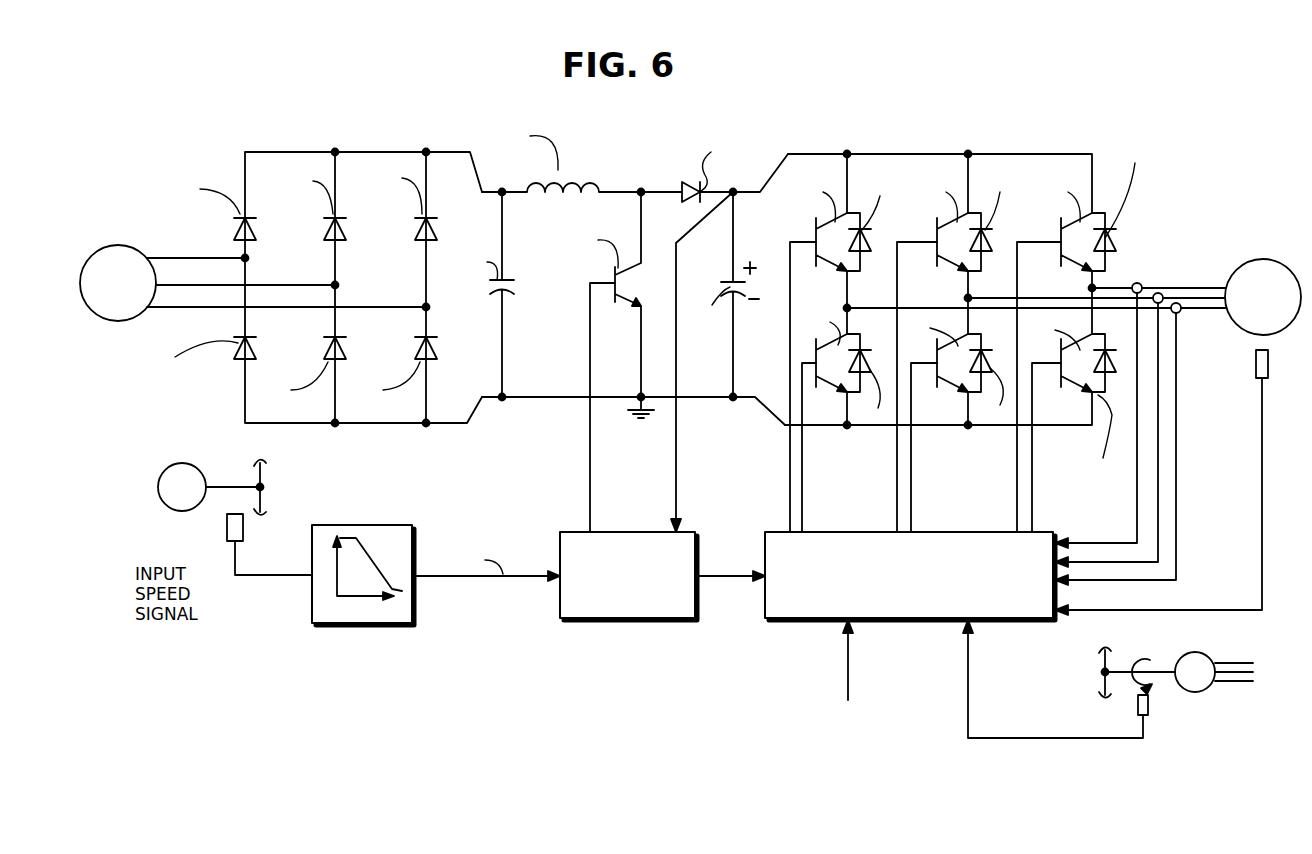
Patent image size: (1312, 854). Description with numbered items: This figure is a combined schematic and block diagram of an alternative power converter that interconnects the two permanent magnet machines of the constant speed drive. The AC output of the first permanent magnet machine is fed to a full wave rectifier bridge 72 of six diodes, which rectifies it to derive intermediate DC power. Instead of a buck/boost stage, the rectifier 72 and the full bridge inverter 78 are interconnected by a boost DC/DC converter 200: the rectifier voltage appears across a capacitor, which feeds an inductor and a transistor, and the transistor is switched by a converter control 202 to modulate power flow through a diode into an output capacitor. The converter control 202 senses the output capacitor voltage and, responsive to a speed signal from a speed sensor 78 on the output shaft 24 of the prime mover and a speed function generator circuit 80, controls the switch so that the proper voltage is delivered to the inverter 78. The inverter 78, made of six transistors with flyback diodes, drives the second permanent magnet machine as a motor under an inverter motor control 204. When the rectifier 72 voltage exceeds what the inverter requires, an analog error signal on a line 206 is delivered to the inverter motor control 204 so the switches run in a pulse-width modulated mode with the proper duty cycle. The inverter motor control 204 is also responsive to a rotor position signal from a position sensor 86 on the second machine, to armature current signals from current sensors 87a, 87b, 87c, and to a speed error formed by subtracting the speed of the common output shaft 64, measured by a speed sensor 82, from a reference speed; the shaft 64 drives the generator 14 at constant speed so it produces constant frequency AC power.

The full wave rectifier bridge 72 is at (316, 140).
The full bridge inverter 78 is at (948, 140).
The boost DC/DC converter 200 is at (625, 155).
The current sensor 87a is at (1137, 283).
The current sensor 87b is at (1158, 293).
The current sensor 87c is at (1176, 303).
The position sensor 86 is at (1268, 365).
The speed function generator circuit 80 is at (312, 595).
The output shaft of the prime mover 24 is at (222, 485).
The converter control 202 is at (603, 623).
The line 206 is at (728, 580).
The inverter motor control 204 is at (812, 622).
The generator 14 is at (1195, 652).
The common output shaft 64 is at (1165, 660).
The speed sensor 82 is at (1150, 703).